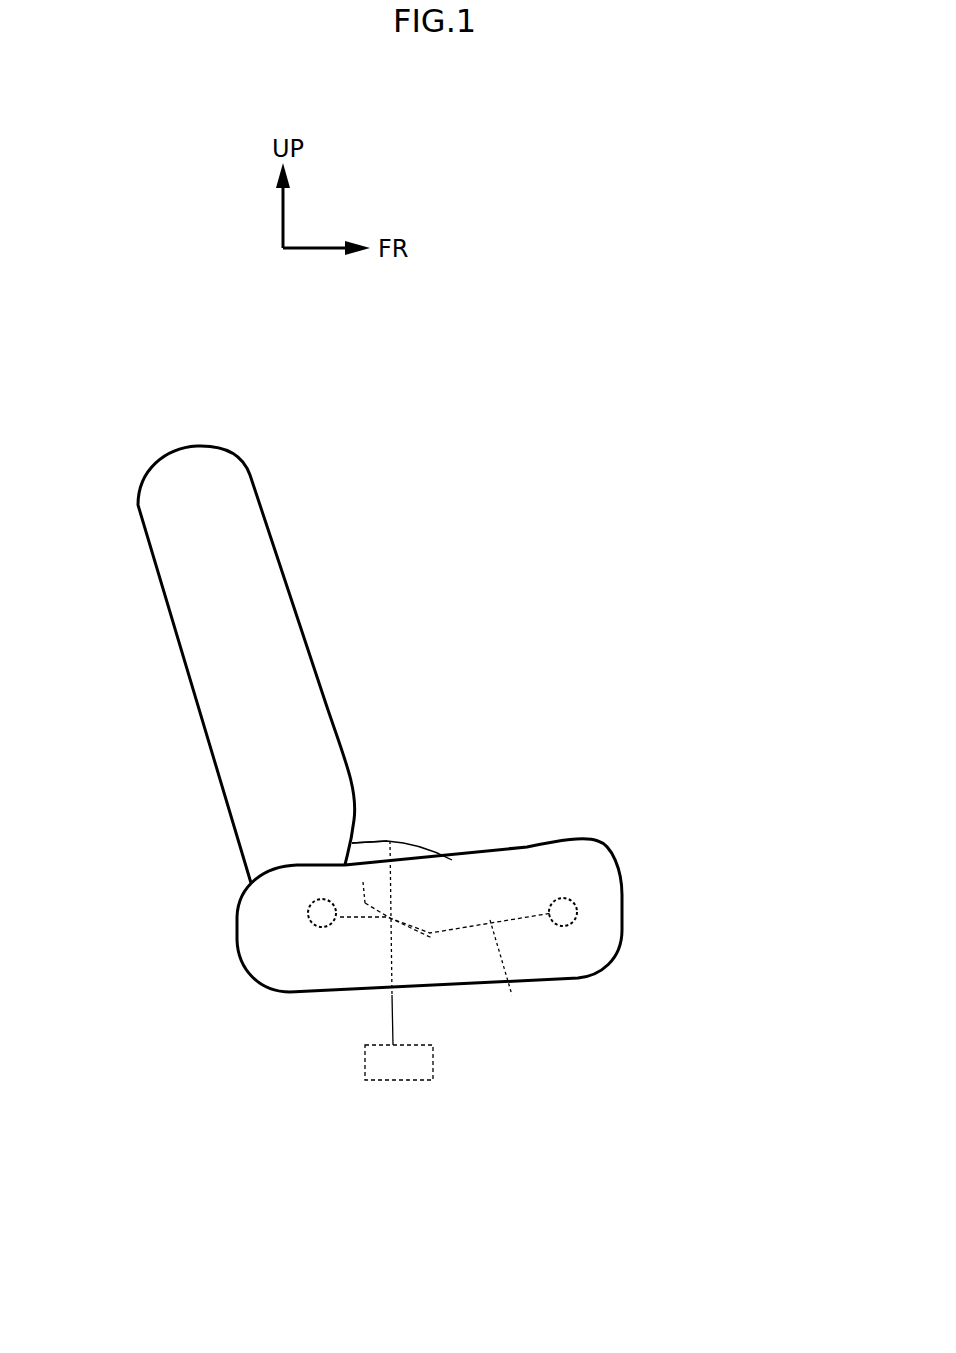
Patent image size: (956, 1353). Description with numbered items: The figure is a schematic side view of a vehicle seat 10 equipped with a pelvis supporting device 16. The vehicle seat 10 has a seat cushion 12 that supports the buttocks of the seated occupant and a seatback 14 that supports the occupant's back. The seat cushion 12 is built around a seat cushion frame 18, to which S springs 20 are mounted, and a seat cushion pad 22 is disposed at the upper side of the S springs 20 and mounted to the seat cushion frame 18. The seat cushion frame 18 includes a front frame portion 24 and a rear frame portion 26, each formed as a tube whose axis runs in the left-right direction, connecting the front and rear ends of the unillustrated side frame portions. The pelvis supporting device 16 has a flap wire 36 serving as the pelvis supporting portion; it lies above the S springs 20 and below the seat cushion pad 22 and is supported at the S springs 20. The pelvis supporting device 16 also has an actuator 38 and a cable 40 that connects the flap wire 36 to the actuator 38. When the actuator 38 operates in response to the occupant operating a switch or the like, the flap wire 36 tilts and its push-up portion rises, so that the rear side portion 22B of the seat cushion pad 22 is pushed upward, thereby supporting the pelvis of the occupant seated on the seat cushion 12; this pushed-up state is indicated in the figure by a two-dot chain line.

The vehicle seat 10 is at (542, 384).
The seat cushion 12 is at (612, 842).
The seatback 14 is at (163, 457).
The pelvis supporting device 16 is at (310, 1072).
The seat cushion frame 18 is at (446, 920).
The S springs 20 is at (512, 995).
The seat cushion pad 22 is at (528, 840).
The rear side portion 22B is at (390, 860).
The front frame portion 24 is at (578, 913).
The rear frame portion 26 is at (311, 926).
The flap wire 36 is at (363, 890).
The actuator 38 is at (422, 1080).
The cable 40 is at (393, 1030).